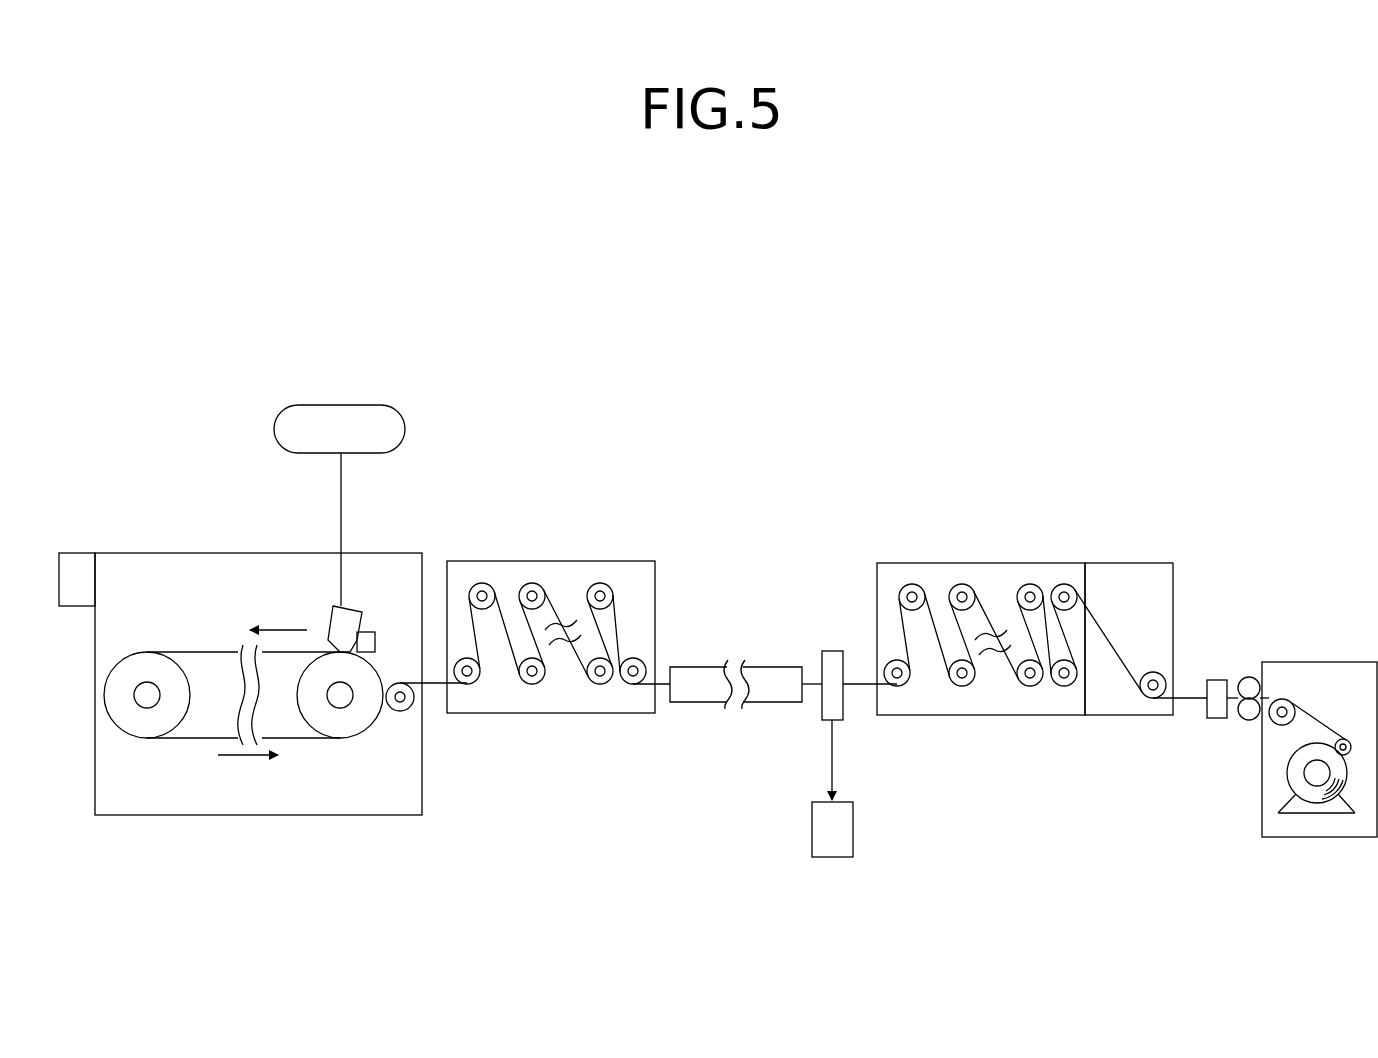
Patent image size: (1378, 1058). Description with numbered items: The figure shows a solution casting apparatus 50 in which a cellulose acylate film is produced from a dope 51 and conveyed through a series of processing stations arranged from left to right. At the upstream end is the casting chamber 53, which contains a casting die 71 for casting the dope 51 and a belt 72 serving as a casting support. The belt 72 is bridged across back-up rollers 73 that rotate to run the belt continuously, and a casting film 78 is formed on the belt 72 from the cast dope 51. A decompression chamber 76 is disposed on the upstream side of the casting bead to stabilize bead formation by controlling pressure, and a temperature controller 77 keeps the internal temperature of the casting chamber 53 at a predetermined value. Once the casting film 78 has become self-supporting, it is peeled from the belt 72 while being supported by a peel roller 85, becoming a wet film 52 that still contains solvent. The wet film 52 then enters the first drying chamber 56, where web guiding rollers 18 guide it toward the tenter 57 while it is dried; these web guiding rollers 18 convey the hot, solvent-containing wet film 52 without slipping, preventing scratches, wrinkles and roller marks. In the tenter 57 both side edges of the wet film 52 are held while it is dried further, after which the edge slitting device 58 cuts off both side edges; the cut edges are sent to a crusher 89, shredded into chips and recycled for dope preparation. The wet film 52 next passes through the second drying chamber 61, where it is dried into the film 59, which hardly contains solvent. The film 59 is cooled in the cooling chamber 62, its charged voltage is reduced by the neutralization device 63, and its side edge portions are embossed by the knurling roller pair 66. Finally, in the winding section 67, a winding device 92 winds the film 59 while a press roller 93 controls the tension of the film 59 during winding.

The solution casting apparatus 50 is at (798, 290).
The dope 51 is at (405, 420).
The wet film 52 is at (812, 682).
The casting chamber 53 is at (185, 815).
The first drying chamber 56 is at (545, 556).
The tenter 57 is at (765, 667).
The edge slitting device 58 is at (830, 665).
The film 59 is at (1118, 660).
The second drying chamber 61 is at (1052, 558).
The cooling chamber 62 is at (1140, 562).
The neutralization device 63 is at (1215, 680).
The knurling roller pair 66 is at (1248, 684).
The winding section 67 is at (1330, 662).
The casting die 71 is at (355, 603).
The belt 72 is at (382, 682).
The back-up rollers 73 is at (183, 722).
The decompression chamber 76 is at (375, 638).
The temperature controller 77 is at (70, 607).
The casting film 78 is at (207, 652).
The peel roller 85 is at (407, 712).
The crusher 89 is at (812, 830).
The winding device 92 is at (1290, 800).
The press roller 93 is at (1345, 738).
The web guiding rollers 18 is at (470, 686).